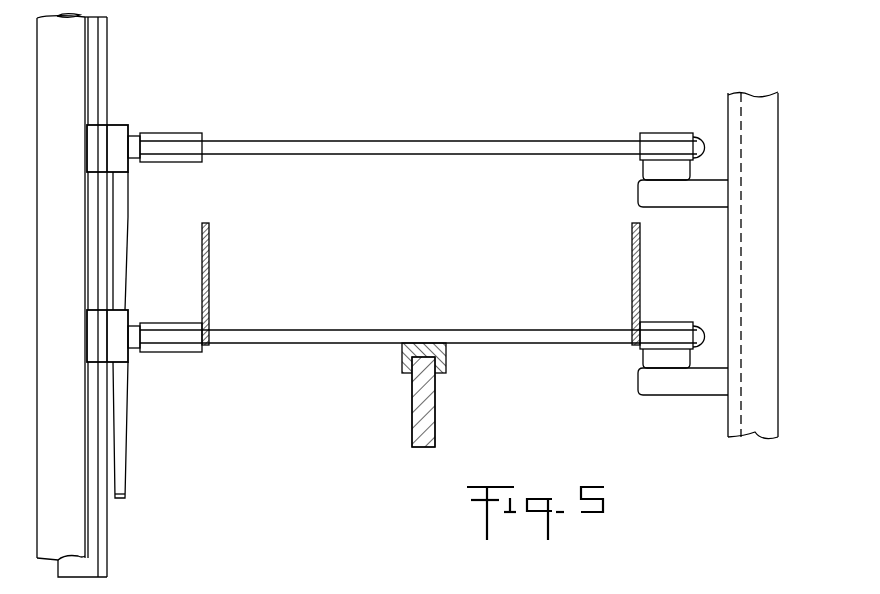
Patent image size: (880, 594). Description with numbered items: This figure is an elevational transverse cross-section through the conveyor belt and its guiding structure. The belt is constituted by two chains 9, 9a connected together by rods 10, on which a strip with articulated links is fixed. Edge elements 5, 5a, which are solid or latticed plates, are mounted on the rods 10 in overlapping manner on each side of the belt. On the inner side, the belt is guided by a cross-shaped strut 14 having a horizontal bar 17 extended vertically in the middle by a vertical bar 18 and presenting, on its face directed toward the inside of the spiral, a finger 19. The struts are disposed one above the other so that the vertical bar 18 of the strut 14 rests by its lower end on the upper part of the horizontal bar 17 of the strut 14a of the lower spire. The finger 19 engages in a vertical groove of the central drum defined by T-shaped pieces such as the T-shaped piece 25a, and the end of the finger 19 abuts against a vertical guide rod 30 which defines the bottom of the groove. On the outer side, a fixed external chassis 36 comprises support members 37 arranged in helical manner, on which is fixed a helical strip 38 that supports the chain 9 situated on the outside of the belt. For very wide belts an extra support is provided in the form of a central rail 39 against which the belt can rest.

The edge element 5 is at (630, 246).
The edge element 5a is at (210, 272).
The chain 9 is at (668, 322).
The chain 9a is at (165, 331).
The rod 10 is at (390, 147).
The strut 14 is at (132, 252).
The strut of the lower spire 14a is at (120, 438).
The horizontal bar 17 is at (128, 130).
The vertical bar 18 is at (122, 291).
The finger 19 is at (98, 136).
The T-shaped piece 25a is at (92, 568).
The vertical guide rod 30 is at (62, 520).
The fixed external chassis 36 is at (752, 232).
The support member 37 is at (672, 378).
The helical strip 38 is at (645, 168).
The central rail 39 is at (382, 378).